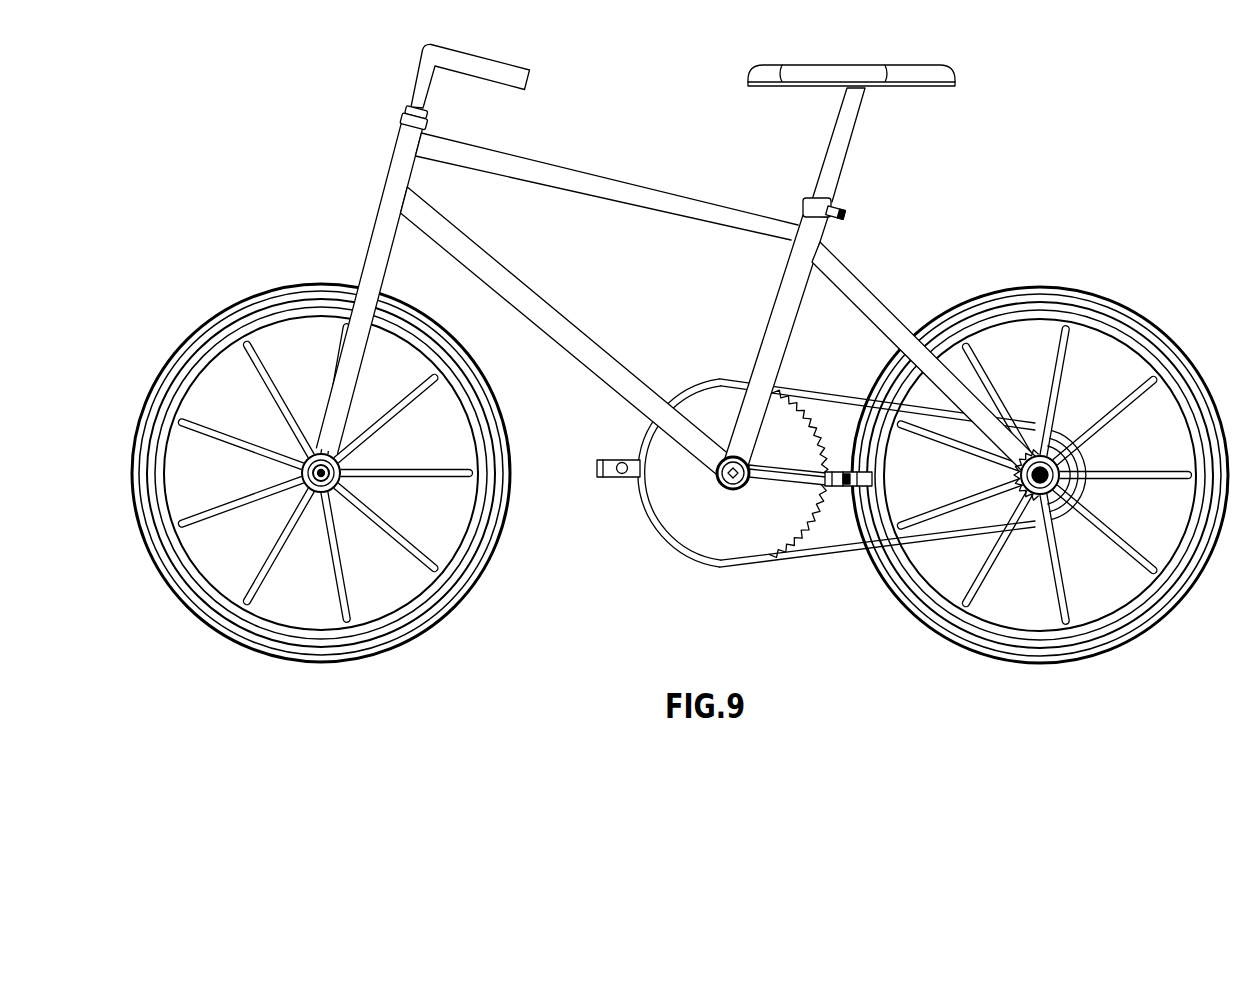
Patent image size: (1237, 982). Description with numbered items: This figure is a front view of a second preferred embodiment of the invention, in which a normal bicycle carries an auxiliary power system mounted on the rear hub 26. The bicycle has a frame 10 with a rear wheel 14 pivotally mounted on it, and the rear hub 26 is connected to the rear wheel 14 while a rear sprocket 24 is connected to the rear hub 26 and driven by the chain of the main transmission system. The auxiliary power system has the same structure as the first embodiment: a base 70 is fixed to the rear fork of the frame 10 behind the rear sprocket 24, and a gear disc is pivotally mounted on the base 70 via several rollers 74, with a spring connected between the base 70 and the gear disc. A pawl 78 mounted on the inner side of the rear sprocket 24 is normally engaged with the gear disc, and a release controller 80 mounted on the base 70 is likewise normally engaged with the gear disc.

The frame 10 is at (862, 297).
The rear wheel 14 is at (1137, 333).
The rear sprocket 24 is at (1133, 597).
The rear hub 26 is at (1022, 505).
The base 70 is at (1053, 487).
The rollers 74 is at (1016, 498).
The pawl 78 is at (987, 473).
The release controller 80 is at (1040, 440).